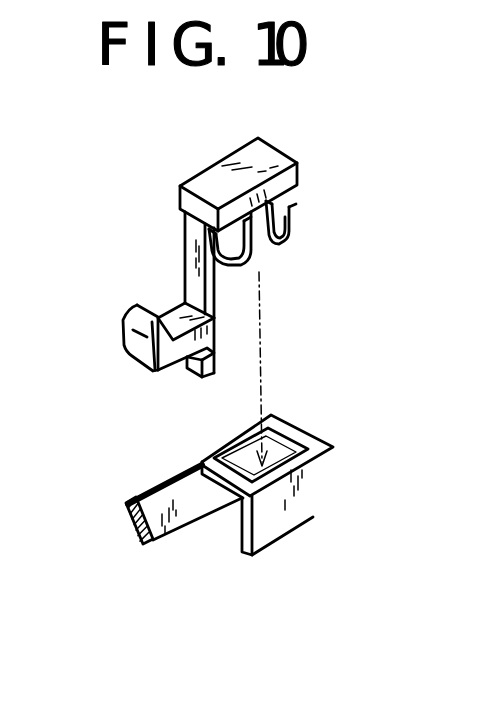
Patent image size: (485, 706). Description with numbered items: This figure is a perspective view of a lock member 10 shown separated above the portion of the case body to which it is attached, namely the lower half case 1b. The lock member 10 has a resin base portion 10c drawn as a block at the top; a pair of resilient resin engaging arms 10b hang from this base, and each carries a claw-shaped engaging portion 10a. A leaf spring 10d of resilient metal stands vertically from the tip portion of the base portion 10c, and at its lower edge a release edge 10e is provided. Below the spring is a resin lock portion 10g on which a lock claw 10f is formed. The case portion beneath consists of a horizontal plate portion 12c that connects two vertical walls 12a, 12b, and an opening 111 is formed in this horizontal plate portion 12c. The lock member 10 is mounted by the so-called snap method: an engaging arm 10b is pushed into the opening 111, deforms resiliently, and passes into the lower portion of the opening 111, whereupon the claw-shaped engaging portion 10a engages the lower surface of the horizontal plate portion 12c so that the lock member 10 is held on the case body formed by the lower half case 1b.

The lock member 10 is at (179, 188).
The claw-shaped engaging portion 10a is at (288, 237).
The resilient engaging arm 10b is at (289, 220).
The base portion 10c is at (210, 184).
The leaf spring 10d is at (188, 245).
The release edge 10e is at (220, 368).
The lock claw 10f is at (127, 318).
The lock portion 10g is at (150, 371).
The vertical wall 12a is at (181, 511).
The vertical wall 12b is at (277, 508).
The horizontal plate portion 12c is at (212, 464).
The opening 111 is at (277, 455).
The lower half case 1b is at (147, 491).